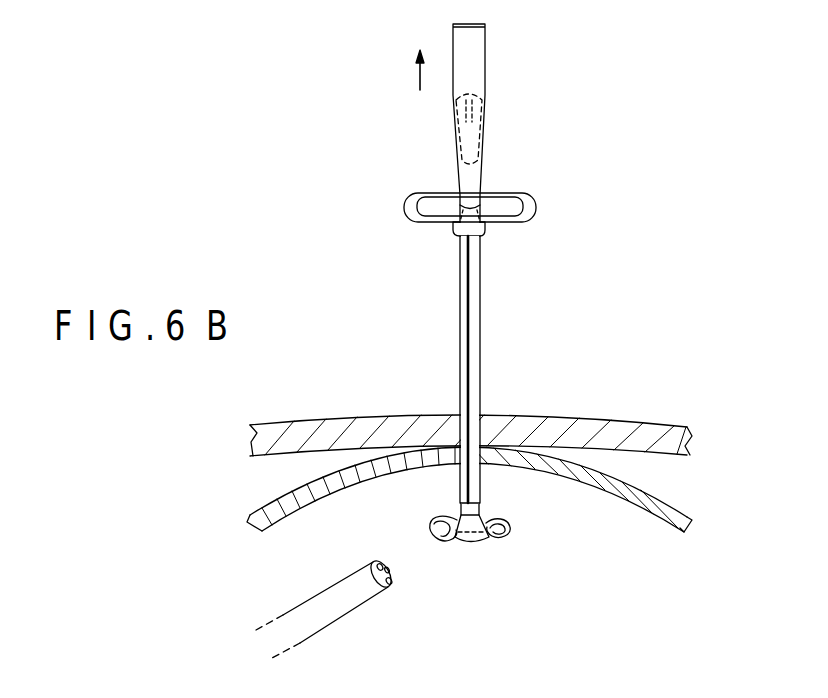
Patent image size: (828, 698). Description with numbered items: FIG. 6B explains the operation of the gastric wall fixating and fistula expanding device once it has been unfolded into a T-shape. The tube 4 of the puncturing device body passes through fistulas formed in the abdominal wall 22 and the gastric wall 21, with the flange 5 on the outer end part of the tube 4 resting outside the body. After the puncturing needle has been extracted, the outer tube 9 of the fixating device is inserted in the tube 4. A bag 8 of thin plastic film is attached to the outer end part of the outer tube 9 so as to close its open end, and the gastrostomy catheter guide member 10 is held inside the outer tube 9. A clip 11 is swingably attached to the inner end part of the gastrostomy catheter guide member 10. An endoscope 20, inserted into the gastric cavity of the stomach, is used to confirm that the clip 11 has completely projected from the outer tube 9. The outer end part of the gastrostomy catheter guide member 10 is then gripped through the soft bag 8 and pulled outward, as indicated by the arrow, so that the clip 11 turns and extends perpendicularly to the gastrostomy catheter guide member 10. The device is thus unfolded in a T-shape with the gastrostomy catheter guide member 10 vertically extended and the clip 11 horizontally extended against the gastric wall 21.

The tube 4 is at (473, 327).
The flange 5 is at (527, 200).
The bag 8 is at (480, 50).
The outer tube 9 is at (458, 181).
The gastrostomy catheter guide member 10 is at (472, 118).
The clip 11 is at (508, 533).
The endoscope 20 is at (347, 605).
The gastric wall 21 is at (622, 487).
The abdominal wall 22 is at (617, 425).